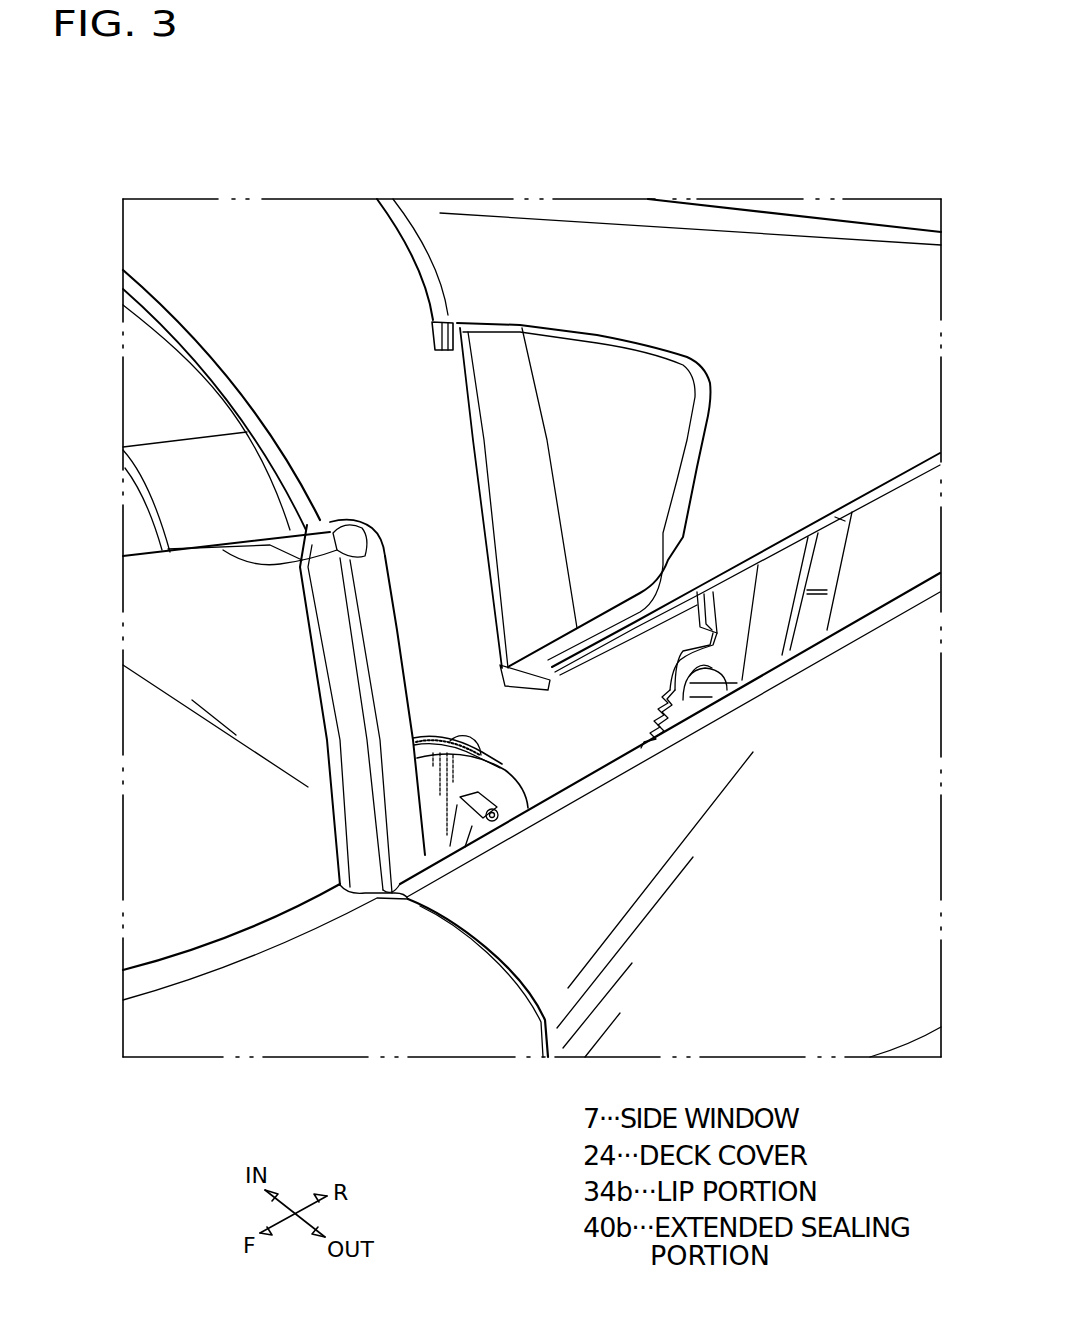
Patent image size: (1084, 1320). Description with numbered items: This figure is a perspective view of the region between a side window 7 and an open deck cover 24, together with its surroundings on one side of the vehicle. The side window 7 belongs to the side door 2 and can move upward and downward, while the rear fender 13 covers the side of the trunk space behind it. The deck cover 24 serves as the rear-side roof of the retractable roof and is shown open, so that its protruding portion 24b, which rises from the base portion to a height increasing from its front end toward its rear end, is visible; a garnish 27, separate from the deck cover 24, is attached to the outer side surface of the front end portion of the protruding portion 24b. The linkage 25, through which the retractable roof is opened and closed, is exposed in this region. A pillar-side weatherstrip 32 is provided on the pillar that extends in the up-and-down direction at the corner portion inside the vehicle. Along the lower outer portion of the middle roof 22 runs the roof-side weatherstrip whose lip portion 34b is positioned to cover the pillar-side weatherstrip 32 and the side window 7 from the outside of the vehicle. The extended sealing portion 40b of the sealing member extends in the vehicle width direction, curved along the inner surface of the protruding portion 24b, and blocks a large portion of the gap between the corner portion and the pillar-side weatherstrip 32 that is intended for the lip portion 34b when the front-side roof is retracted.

The side door 2 is at (335, 1018).
The side window 7 is at (194, 868).
The rear fender 13 is at (857, 826).
The middle roof 22 is at (170, 380).
The deck cover 24 is at (843, 223).
The protruding portion 24b is at (843, 381).
The linkage 25 is at (840, 563).
The garnish 27 is at (465, 421).
The pillar-side weatherstrip 32 is at (395, 599).
The lip portion 34b is at (253, 560).
The extended sealing portion 40b is at (432, 333).